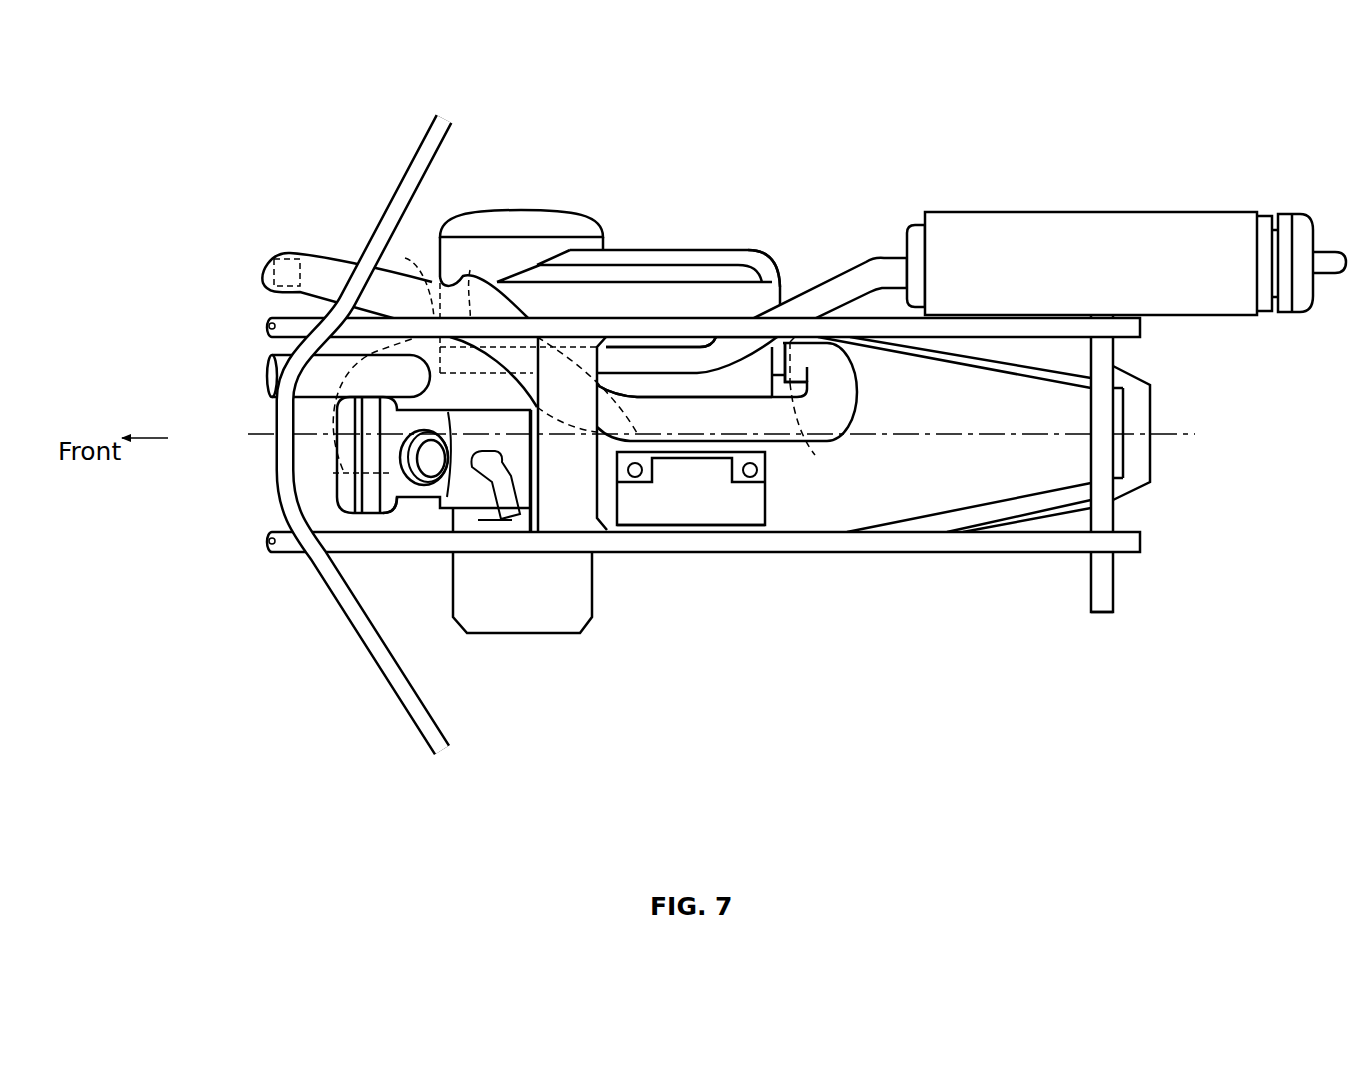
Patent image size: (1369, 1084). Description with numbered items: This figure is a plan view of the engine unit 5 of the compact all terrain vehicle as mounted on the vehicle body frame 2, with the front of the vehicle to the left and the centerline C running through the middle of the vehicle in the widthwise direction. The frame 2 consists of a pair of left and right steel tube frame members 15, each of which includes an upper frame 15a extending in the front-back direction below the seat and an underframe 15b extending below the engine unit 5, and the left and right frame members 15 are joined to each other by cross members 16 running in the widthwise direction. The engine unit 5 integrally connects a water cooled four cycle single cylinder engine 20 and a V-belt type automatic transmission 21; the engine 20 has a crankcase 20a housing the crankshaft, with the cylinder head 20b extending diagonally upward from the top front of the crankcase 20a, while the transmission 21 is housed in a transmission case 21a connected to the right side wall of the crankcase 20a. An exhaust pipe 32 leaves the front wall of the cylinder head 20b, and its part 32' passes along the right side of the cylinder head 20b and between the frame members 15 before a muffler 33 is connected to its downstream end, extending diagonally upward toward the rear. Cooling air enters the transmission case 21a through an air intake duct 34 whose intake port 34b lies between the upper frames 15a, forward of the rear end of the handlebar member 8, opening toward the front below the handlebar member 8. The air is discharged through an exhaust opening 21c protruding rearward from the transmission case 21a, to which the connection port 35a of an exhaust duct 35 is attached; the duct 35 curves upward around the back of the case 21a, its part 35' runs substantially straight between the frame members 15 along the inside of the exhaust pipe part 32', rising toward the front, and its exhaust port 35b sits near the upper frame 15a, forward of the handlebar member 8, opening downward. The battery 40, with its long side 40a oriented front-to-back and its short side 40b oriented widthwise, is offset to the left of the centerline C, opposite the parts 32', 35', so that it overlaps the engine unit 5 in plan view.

The vehicle body frame 2 is at (875, 568).
The engine unit 5 is at (677, 245).
The handlebar member 8 is at (452, 140).
The frame member 15 is at (729, 442).
The upper frame 15a is at (955, 319).
The underframe 15b is at (1046, 355).
The cross member 16 is at (598, 494).
The engine 20 is at (600, 616).
The crankcase 20a is at (453, 608).
The cylinder head 20b is at (410, 498).
The automatic transmission 21 is at (650, 246).
The transmission case 21a is at (722, 248).
The exhaust opening 21c is at (600, 400).
The exhaust pipe 32 is at (811, 259).
The part of exhaust pipe 32' is at (661, 317).
The muffler 33 is at (1210, 212).
The air intake duct 34 is at (386, 294).
The intake port 34b is at (268, 377).
The exhaust duct 35 is at (700, 333).
The connection port 35a is at (781, 356).
The exhaust port 35b is at (272, 256).
The part of exhaust duct 35' is at (684, 343).
The battery 40 is at (769, 502).
The long side 40a is at (698, 528).
The short side 40b is at (767, 481).
The centerline C is at (1182, 431).